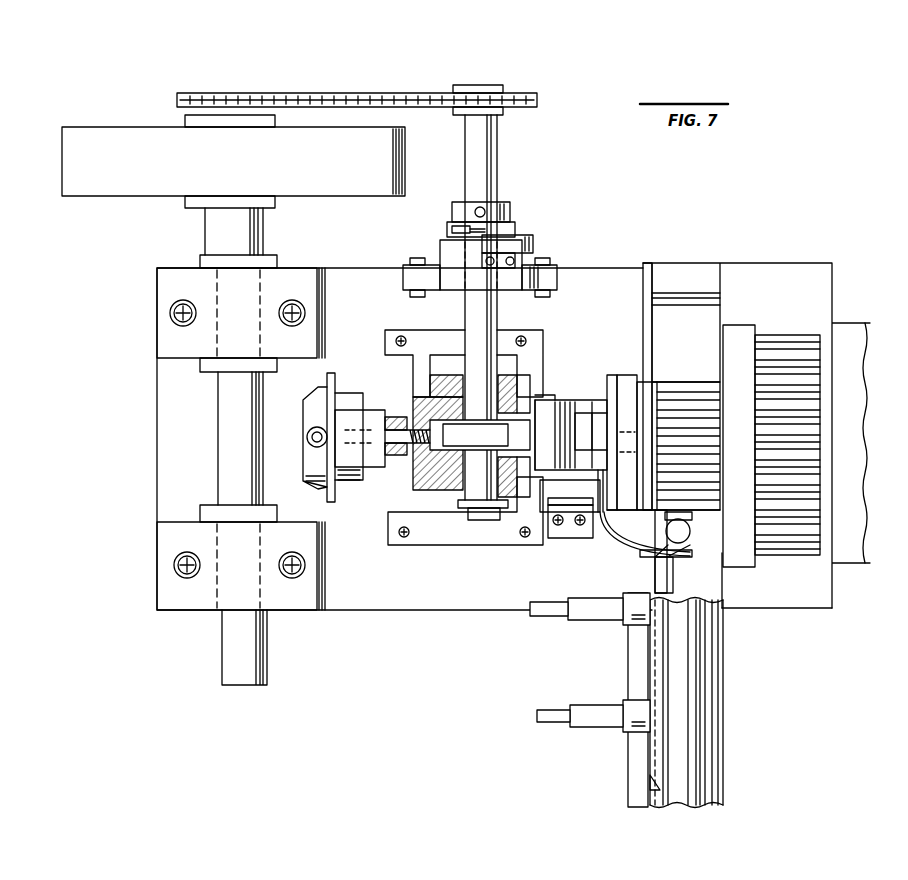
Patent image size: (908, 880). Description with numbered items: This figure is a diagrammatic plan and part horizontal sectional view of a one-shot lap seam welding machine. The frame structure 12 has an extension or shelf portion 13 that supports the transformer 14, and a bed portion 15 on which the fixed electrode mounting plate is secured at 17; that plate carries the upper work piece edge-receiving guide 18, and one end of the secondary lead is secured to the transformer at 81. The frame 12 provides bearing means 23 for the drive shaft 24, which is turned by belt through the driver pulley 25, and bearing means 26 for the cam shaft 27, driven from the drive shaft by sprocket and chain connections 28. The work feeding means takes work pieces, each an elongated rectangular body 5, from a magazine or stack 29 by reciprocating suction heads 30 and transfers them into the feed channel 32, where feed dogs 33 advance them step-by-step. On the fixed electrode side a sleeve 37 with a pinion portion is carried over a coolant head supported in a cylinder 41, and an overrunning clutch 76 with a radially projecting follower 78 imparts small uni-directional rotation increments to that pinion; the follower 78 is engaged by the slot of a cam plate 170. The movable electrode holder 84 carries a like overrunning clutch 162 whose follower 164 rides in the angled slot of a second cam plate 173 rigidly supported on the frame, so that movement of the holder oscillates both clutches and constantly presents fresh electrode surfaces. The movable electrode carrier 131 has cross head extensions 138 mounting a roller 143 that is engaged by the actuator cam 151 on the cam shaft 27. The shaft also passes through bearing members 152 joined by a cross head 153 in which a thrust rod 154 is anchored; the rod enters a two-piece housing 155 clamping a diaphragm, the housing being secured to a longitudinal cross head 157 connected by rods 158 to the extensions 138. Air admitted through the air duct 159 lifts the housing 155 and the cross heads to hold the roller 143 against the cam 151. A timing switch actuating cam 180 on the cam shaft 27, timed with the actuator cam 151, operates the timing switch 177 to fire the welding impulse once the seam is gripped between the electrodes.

The elongated rectangular body 5 is at (690, 672).
The frame structure 12 is at (385, 613).
The extension or shelf portion 13 is at (862, 332).
The transformer 14 is at (796, 330).
The bed portion 15 is at (768, 268).
The securing means 17 is at (650, 420).
The upper work piece edge-receiving guide 18 is at (643, 289).
The bearing means 23 is at (157, 298).
The drive shaft 24 is at (225, 437).
The driver pulley 25 is at (148, 188).
The bearing means 26 is at (438, 252).
The cam shaft 27 is at (498, 151).
The sprocket and chain connections 28 is at (346, 94).
The magazine or stack 29 is at (727, 702).
The reciprocating suction heads 30 is at (628, 614).
The feed channel 32 is at (640, 681).
The feed dogs 33 is at (655, 790).
The sleeve 37 is at (684, 522).
The cylinder 41 is at (675, 590).
The overrunning clutch 76 is at (690, 534).
The follower 78 is at (700, 546).
The securing point 81 is at (600, 427).
The movable electrode holder 84 is at (608, 393).
The movable electrode carrier 131 is at (612, 417).
The cross head extensions 138 is at (598, 412).
The roller 143 is at (585, 415).
The actuator cam 151 is at (540, 396).
The bearing members 152 is at (516, 375).
The cross head 153 is at (425, 470).
The thrust rod 154 is at (396, 437).
The two-piece housing 155 is at (337, 392).
The longitudinal cross head 157 is at (385, 468).
The rods 158 is at (545, 436).
The air duct 159 is at (311, 450).
The overrunning clutch 162 is at (610, 548).
The follower 164 is at (574, 538).
The cam plate 170 is at (672, 556).
The second cam plate 173 is at (545, 545).
The timing switch 177 is at (535, 242).
The timing switch actuating cam 180 is at (452, 229).